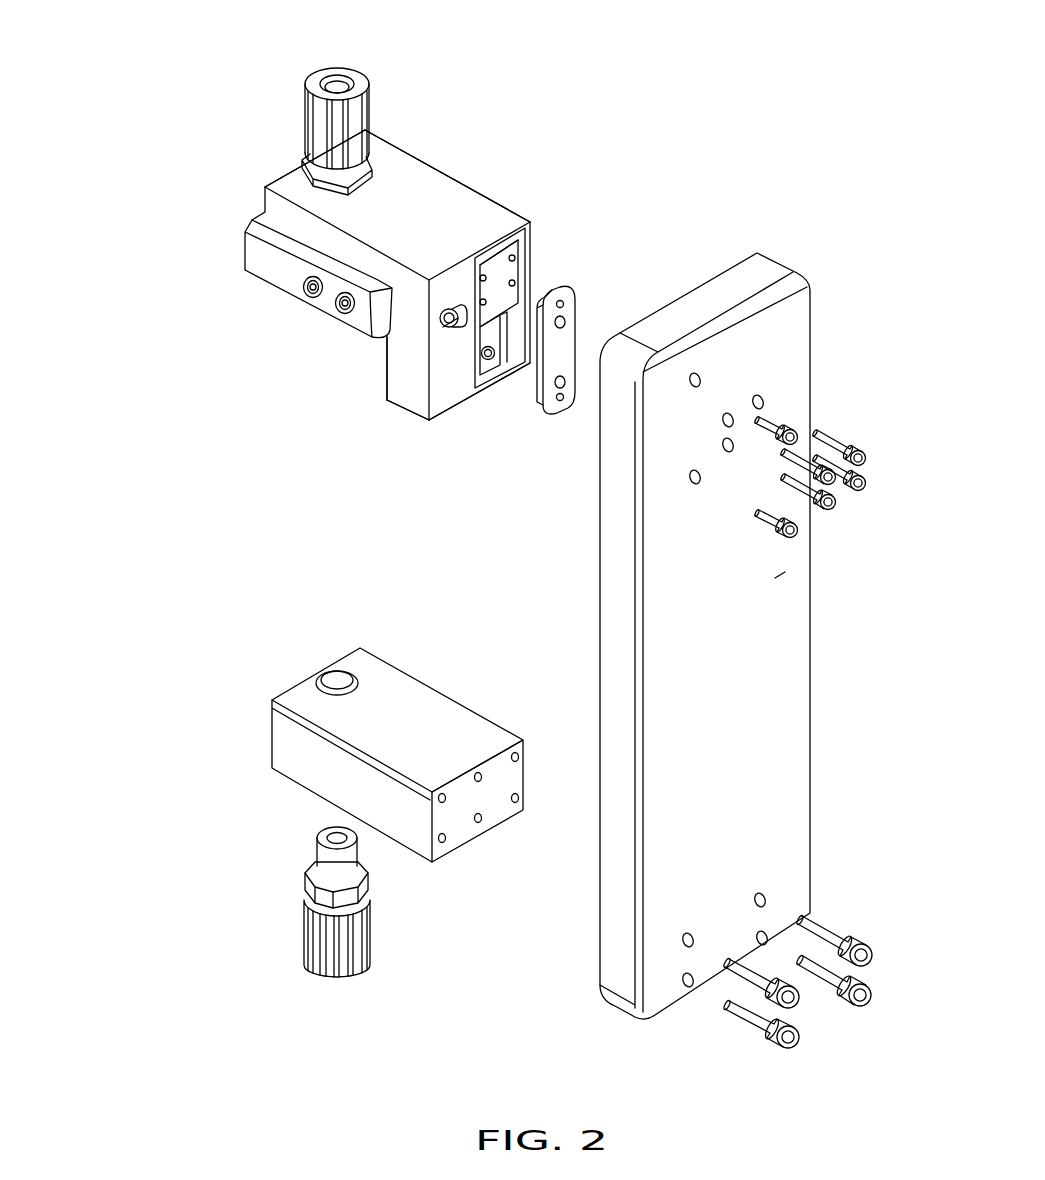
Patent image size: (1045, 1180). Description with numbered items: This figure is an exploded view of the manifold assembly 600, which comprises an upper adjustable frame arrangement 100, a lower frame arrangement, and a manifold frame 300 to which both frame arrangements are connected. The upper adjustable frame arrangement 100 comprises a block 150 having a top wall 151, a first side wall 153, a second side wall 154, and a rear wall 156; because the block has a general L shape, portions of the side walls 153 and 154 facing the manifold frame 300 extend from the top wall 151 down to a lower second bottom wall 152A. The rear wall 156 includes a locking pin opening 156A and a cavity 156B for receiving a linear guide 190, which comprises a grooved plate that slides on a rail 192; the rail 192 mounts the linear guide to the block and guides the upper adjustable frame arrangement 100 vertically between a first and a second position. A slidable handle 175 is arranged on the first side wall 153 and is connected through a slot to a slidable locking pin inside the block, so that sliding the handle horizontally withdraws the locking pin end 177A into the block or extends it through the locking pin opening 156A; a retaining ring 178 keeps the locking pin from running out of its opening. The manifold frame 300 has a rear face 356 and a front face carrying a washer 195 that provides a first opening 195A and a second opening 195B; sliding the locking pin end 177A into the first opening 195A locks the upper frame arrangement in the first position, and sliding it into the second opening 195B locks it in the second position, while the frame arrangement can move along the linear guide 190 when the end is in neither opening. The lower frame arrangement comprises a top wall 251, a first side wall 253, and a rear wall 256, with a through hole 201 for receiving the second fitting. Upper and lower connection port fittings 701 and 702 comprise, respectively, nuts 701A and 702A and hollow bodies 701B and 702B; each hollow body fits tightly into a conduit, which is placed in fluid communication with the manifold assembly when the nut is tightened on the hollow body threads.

The upper adjustable frame arrangement 100 is at (195, 158).
The manifold assembly 600 is at (148, 492).
The block 150 is at (373, 217).
The top wall 151 is at (283, 187).
The second side wall 154 is at (460, 180).
The slidable handle 175 is at (260, 260).
The first side wall 153 is at (410, 352).
The lower second bottom wall 152A is at (403, 408).
The rear wall 156 is at (438, 400).
The cavity 156B is at (507, 360).
The retaining ring 178 is at (530, 260).
The linear guide 190 is at (503, 271).
The rail 192 is at (487, 367).
The locking pin opening 156A is at (452, 306).
The locking pin end 177A is at (443, 327).
The upper connection port fitting 701 is at (317, 117).
The nut 701A is at (372, 110).
The hollow body 701B is at (372, 142).
The washer 195 is at (570, 296).
The first opening 195A is at (563, 316).
The second opening 195B is at (559, 398).
The manifold frame 300 is at (812, 680).
The rear face 356 is at (775, 578).
The top wall 251 is at (455, 723).
The first side wall 253 is at (292, 742).
The rear wall 256 is at (493, 807).
The through hole 201 is at (332, 683).
The lower connection port fitting 702 is at (305, 925).
The hollow body 702B is at (317, 870).
The nut 702A is at (352, 957).